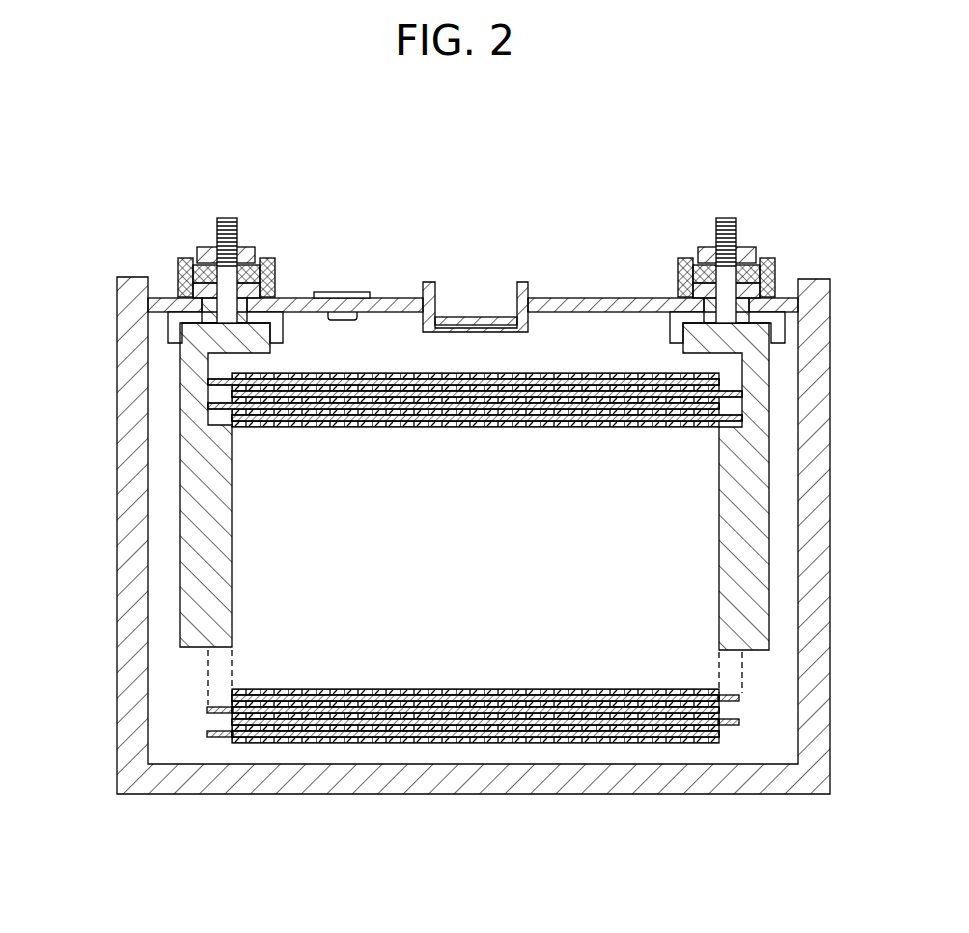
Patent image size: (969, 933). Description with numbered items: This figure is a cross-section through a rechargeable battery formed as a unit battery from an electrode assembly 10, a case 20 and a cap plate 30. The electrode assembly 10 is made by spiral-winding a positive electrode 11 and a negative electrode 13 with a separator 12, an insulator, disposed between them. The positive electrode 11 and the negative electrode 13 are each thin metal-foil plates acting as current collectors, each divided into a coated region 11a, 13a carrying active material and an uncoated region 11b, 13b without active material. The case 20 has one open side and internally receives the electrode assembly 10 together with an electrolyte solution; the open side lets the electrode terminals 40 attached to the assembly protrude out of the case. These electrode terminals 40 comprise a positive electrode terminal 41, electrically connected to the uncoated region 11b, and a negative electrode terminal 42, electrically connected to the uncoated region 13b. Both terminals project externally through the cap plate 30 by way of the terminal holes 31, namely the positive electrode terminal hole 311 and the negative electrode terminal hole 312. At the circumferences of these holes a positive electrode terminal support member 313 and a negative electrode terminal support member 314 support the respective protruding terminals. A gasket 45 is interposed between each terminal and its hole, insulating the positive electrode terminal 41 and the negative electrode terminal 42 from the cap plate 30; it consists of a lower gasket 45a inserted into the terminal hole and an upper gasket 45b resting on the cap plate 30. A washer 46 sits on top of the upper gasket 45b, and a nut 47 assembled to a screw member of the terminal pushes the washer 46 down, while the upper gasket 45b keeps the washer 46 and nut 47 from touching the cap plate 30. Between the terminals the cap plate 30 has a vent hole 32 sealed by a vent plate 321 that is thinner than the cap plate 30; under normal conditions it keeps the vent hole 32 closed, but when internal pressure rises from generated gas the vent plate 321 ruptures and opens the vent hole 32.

The electrode assembly 10 is at (400, 782).
The positive electrode 11 is at (458, 809).
The coated region 11a is at (295, 743).
The uncoated region 11b is at (225, 743).
The separator 12 is at (475, 743).
The negative electrode 13 is at (488, 805).
The coated region 13a is at (632, 743).
The uncoated region 13b is at (730, 743).
The case 20 is at (818, 420).
The cap plate 30 is at (558, 290).
The terminal holes 31 is at (475, 413).
The positive electrode terminal hole 311 is at (226, 298).
The negative electrode terminal hole 312 is at (340, 490).
The positive electrode terminal support member 313 is at (257, 290).
The negative electrode terminal support member 314 is at (683, 290).
The vent hole 32 is at (453, 293).
The vent plate 321 is at (500, 317).
The electrode terminals 40 is at (496, 230).
The positive electrode terminal 41 is at (227, 218).
The negative electrode terminal 42 is at (724, 218).
The gasket 45 is at (408, 289).
The lower gasket 45a is at (170, 328).
The upper gasket 45b is at (180, 266).
The washer 46 is at (195, 266).
The nut 47 is at (205, 262).